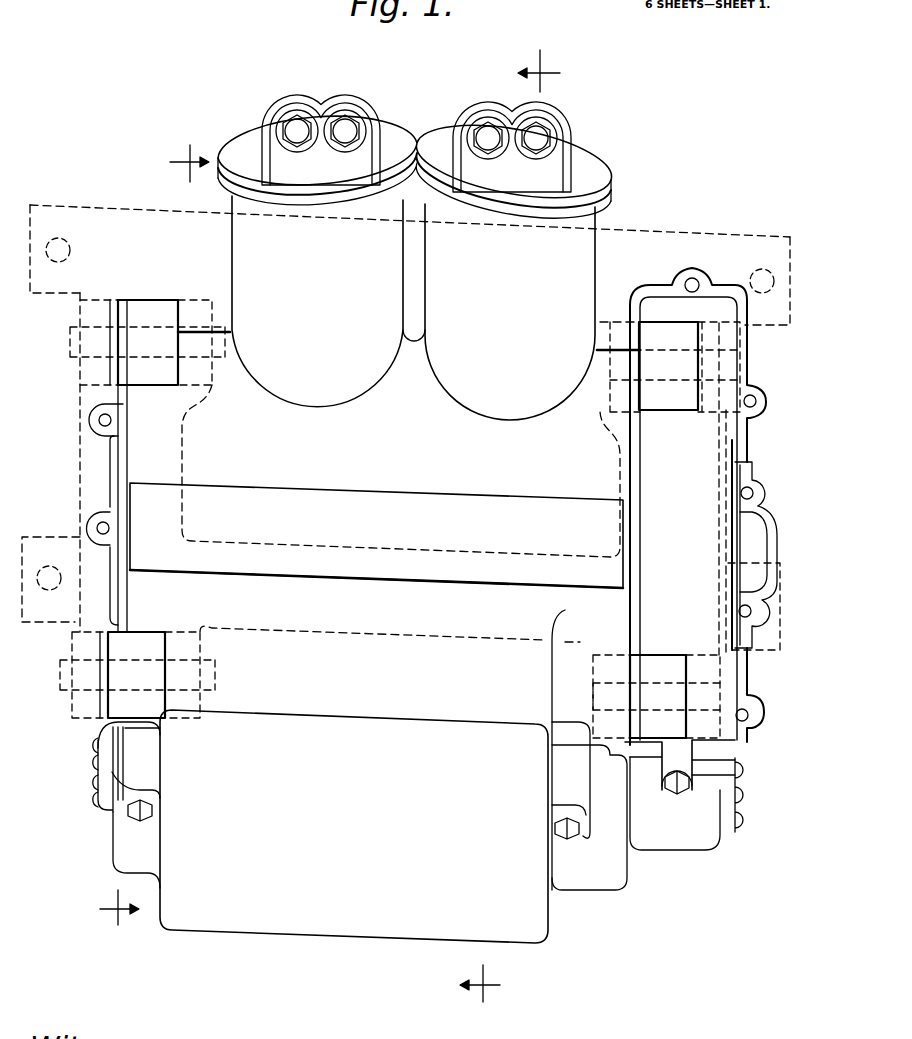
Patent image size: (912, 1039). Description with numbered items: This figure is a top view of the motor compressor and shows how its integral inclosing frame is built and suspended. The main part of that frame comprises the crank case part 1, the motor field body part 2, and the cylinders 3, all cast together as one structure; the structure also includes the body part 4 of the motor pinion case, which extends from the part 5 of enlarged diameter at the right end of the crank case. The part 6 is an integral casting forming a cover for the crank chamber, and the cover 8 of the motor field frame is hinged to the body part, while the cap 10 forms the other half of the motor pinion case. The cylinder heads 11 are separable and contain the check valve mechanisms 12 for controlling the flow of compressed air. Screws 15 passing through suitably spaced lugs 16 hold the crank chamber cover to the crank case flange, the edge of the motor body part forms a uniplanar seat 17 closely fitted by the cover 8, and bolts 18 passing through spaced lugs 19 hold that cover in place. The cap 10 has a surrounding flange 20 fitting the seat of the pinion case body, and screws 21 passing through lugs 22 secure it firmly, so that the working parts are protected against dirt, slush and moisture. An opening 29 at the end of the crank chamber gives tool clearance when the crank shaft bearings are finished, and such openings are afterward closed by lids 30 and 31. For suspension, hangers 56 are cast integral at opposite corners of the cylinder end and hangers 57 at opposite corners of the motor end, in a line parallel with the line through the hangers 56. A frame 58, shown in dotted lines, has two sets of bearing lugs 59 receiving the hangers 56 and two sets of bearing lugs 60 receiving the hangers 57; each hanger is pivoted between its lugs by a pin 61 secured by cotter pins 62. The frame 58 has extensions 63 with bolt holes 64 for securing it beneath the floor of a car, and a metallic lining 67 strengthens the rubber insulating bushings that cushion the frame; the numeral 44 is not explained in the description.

The crank case part 1 is at (376, 486).
The motor field body part 2 is at (105, 730).
The cylinders 3 is at (572, 250).
The body part of the motor pinion case 4 is at (760, 746).
The part of enlarged diameter 5 is at (712, 432).
The cover for the crank chamber 6 is at (154, 537).
The cover of the motor field frame 8 is at (335, 922).
The cap of the motor pinion case 10 is at (693, 835).
The cylinder heads 11 is at (582, 158).
The check valve mechanisms 12 is at (548, 113).
The screws 15 is at (100, 428).
The lugs 16 is at (97, 421).
The uniplanar seat 17 is at (742, 775).
The bolts 18 is at (135, 818).
The lugs 19 is at (140, 778).
The surrounding flange 20 is at (720, 785).
The screws 21 is at (690, 790).
The lugs 22 is at (685, 795).
The opening 29 is at (720, 473).
The lid 30 is at (110, 488).
The lid 31 is at (735, 550).
The ribs 44 is at (112, 810).
The hangers 56 is at (160, 378).
The hangers 57 is at (160, 640).
The frame 58 is at (122, 205).
The bearing lugs 59 is at (82, 372).
The bearing lugs 60 is at (605, 652).
The pin 61 is at (212, 385).
The cotter pins 62 is at (72, 365).
The extensions 63 is at (40, 200).
The bolt holes 64 is at (66, 240).
The metallic lining 67 is at (735, 368).